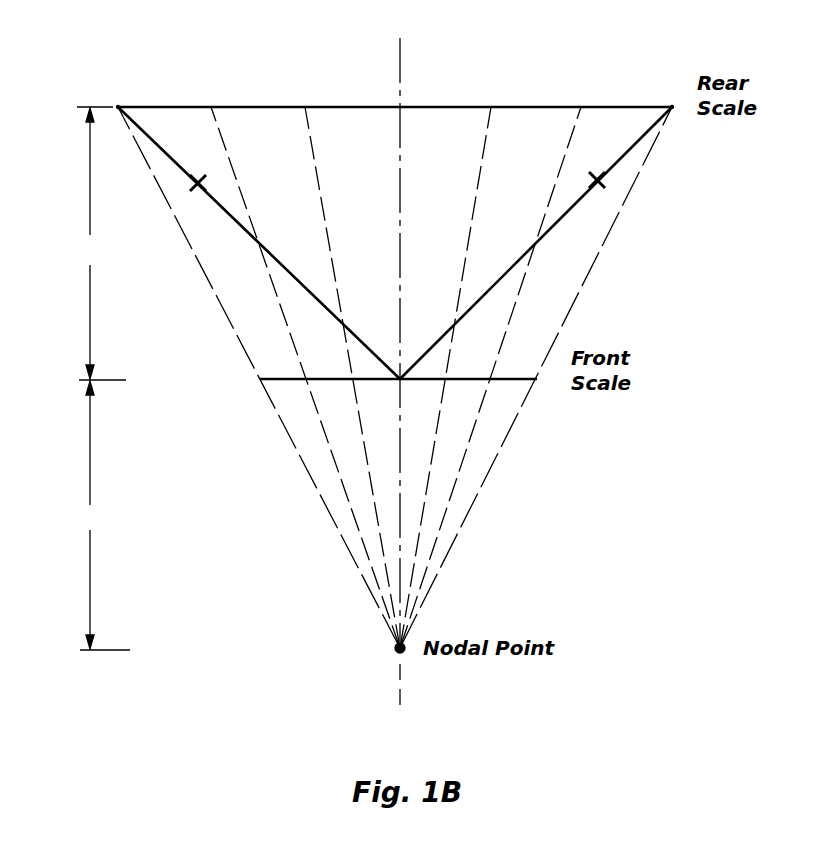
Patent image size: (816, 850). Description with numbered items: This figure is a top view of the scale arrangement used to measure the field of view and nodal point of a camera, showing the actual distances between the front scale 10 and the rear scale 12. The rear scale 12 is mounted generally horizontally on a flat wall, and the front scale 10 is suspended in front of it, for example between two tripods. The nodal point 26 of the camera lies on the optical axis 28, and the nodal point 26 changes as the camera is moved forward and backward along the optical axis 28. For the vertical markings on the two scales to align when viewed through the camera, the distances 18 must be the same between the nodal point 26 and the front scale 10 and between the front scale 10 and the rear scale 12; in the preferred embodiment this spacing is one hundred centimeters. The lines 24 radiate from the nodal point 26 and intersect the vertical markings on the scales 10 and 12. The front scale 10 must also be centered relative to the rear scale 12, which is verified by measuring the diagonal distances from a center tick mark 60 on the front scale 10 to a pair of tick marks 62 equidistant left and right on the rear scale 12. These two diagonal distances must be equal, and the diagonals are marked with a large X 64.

The front scale 10 is at (518, 386).
The rear scale 12 is at (604, 107).
The distance D 18 is at (103, 378).
The lines 24 is at (361, 428).
The nodal point 26 is at (396, 645).
The optical axis 28 is at (398, 72).
The center tick mark 60 is at (401, 380).
The tick marks 62 is at (118, 107).
The large X 64 is at (197, 174).